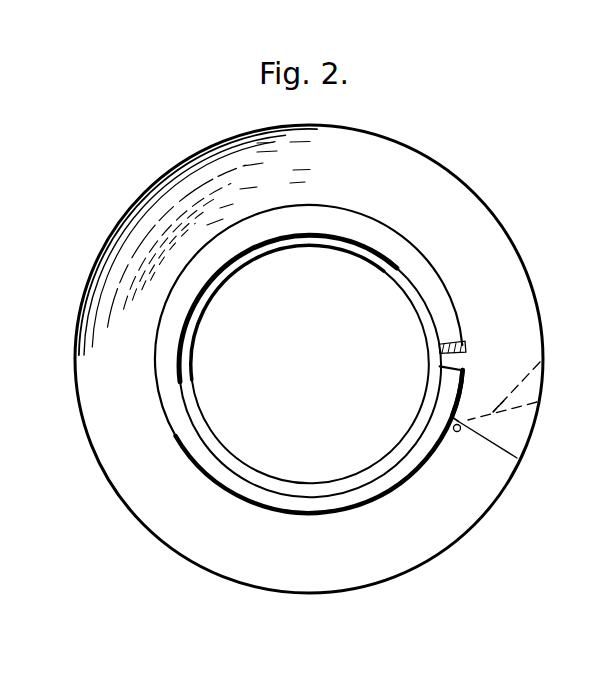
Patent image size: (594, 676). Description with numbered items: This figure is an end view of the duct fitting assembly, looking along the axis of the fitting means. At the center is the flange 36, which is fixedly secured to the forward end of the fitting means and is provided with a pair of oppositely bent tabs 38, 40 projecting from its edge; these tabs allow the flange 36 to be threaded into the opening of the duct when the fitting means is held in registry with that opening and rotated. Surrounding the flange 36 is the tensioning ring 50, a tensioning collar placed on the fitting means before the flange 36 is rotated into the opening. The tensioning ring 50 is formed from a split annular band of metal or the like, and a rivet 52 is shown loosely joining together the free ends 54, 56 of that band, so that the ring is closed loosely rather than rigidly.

The flange 36 is at (362, 492).
The tab 38 is at (451, 383).
The tab 40 is at (461, 347).
The tensioning ring 50 is at (466, 222).
The rivet 52 is at (452, 431).
The free end 54 is at (548, 358).
The free end 56 is at (517, 458).